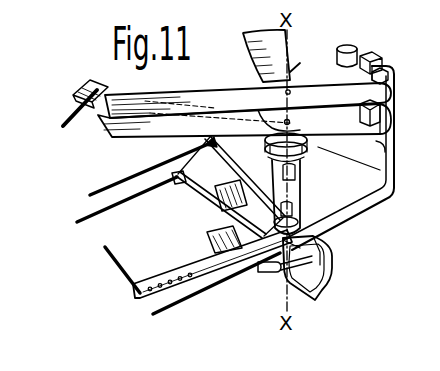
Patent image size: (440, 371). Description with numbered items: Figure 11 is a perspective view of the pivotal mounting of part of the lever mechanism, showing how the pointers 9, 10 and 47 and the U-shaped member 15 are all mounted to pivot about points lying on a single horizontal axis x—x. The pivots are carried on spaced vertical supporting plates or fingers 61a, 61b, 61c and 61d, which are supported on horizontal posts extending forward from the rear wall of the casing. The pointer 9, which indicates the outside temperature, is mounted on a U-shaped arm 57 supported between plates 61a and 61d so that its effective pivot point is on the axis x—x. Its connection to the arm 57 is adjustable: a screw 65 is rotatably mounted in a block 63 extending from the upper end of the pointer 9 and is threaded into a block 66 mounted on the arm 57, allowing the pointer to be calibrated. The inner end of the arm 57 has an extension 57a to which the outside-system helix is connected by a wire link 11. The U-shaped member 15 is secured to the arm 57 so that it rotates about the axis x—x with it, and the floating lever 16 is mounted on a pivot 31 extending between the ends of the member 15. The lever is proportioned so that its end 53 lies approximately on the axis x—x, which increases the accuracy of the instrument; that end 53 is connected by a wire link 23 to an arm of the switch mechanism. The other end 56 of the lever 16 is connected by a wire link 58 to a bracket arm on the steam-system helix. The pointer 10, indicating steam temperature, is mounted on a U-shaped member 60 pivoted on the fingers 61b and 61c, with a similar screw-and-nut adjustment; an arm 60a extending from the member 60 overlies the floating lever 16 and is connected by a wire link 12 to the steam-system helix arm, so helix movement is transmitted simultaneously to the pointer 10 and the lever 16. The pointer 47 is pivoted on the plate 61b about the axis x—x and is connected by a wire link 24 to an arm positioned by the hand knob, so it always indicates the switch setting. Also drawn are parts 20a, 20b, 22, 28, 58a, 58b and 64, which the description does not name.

The pointer 9 is at (207, 91).
The pointer 10 is at (115, 135).
The wire link 11 is at (116, 255).
The wire link 12 is at (127, 178).
The U-shaped member 15 is at (315, 284).
The floating lever 16 is at (201, 204).
The pivot pin 20a is at (290, 122).
The pivot bracket 20b is at (296, 172).
The pivot disc 22 is at (301, 150).
The wire link 23 is at (180, 303).
The wire link 24 is at (68, 111).
The blade edge 28 is at (300, 63).
The pivot 31 is at (228, 234).
The pointer 47 is at (108, 88).
The end of lever 53 is at (272, 268).
The end of lever 56 is at (176, 185).
The U-shaped arm 57 is at (393, 163).
The extension 57a is at (195, 264).
The wire link 58 is at (104, 211).
The pin 58a is at (285, 91).
The bolt 58b is at (295, 209).
The U-shaped member 60 is at (386, 135).
The arm 60a is at (243, 168).
The supporting plate 61a is at (253, 32).
The supporting plate 61b is at (282, 134).
The supporting plate 61c is at (240, 195).
The supporting plate 61d is at (313, 228).
The block 63 is at (372, 55).
The bolt 64 is at (378, 99).
The screw 65 is at (384, 68).
The block 66 is at (348, 46).